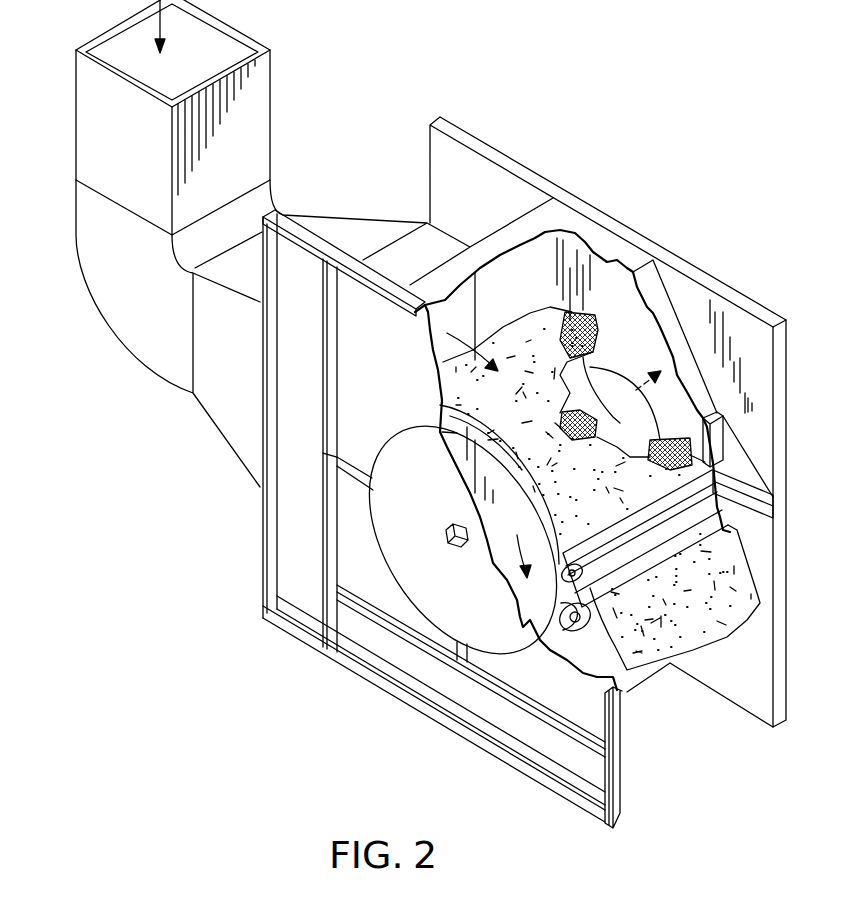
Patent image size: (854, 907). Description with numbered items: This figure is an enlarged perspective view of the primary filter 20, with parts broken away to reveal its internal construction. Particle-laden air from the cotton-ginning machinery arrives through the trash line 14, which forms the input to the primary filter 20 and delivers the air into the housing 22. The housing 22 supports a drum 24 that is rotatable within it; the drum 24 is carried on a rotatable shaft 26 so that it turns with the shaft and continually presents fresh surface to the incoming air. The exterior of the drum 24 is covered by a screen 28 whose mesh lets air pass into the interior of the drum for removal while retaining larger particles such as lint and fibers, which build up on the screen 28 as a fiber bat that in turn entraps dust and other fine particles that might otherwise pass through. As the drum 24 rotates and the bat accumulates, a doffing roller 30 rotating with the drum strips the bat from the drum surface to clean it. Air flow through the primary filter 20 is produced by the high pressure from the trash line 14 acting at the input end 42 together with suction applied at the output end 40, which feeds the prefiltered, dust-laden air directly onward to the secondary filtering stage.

The trash line 14 is at (263, 93).
The primary filter 20 is at (552, 162).
The housing 22 is at (617, 247).
The drum 24 is at (448, 430).
The shaft 26 is at (452, 550).
The screen 28 is at (597, 353).
The doffing roller 30 is at (727, 478).
The output end 40 is at (603, 430).
The input end 42 is at (465, 292).